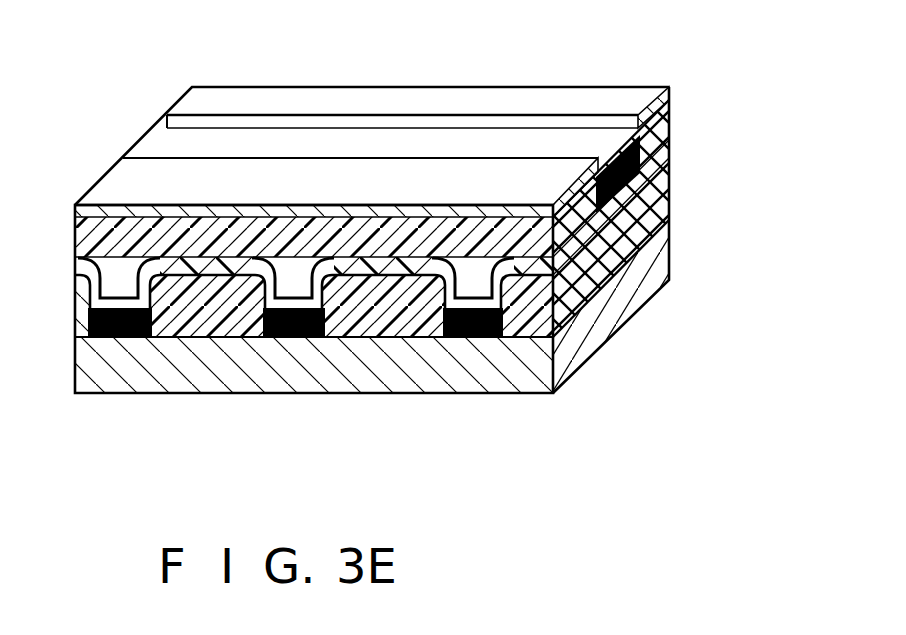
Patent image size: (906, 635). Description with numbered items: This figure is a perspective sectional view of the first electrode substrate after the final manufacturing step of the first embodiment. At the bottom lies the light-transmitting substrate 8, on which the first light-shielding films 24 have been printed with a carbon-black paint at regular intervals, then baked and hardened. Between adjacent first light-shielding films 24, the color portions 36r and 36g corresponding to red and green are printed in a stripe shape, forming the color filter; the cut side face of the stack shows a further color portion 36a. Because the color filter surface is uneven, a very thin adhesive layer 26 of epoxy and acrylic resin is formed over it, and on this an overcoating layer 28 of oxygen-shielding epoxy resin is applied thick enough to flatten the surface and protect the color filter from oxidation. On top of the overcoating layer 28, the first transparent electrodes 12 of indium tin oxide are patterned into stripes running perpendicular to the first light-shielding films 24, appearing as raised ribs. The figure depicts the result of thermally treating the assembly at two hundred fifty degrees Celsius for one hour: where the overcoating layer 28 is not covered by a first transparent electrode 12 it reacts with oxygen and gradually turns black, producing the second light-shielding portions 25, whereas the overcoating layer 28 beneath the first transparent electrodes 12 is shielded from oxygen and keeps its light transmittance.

The light-transmitting substrate 8 is at (640, 298).
The first transparent electrode 12 is at (448, 173).
The first light-shielding film 24 is at (313, 305).
The second light-shielding portion 25 is at (640, 137).
The adhesive layer 26 is at (660, 160).
The overcoating layer 28 is at (632, 258).
The color filter (side) 36a is at (665, 192).
The color portion (red) 36r is at (198, 322).
The color portion (green) 36g is at (387, 320).